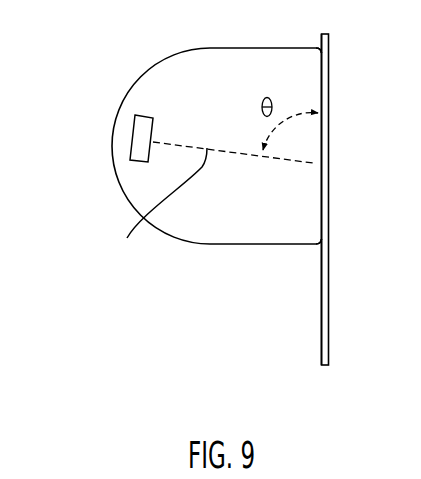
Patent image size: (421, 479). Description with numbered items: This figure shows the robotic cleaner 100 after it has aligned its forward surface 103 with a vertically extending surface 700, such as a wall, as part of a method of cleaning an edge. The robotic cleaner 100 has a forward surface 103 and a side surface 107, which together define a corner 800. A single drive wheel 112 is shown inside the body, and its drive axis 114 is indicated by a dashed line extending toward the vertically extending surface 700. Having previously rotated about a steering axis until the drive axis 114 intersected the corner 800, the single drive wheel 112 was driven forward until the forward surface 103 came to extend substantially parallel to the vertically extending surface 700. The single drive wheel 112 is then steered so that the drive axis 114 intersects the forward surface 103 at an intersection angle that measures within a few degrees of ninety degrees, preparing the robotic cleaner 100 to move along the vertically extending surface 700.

The robotic cleaner 100 is at (183, 170).
The forward surface 103 is at (325, 197).
The side surface 107 is at (245, 247).
The single drive wheel 112 is at (143, 133).
The drive axis 114 is at (160, 211).
The vertically extending surface 700 is at (329, 291).
The corner 800 is at (323, 244).